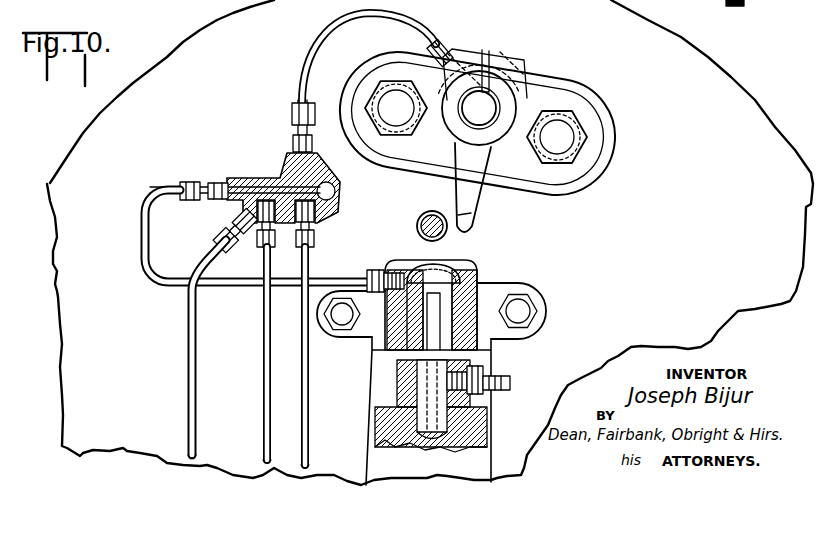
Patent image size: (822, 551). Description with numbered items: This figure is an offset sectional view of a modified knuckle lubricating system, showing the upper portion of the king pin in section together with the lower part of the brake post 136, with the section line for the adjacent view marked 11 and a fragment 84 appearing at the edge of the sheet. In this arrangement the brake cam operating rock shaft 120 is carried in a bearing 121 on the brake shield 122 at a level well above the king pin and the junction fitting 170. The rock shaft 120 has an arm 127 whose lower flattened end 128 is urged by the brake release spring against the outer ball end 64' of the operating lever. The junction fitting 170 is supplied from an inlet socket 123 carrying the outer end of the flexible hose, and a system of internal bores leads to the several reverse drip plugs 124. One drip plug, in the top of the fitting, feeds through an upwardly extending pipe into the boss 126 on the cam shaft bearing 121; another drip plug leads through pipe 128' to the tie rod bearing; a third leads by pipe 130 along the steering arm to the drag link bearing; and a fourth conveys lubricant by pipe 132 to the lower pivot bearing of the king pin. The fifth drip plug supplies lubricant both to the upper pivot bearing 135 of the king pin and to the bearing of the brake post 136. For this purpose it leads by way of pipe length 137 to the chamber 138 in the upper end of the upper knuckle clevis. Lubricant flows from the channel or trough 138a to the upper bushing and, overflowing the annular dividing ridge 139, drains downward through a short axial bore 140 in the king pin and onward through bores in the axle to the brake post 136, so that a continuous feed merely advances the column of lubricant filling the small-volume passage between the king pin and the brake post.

The section line 11- 11 is at (180, 21).
The outer ball end 64' is at (425, 211).
The pump part 84 is at (751, 5).
The brake cam operating rock shaft 120 is at (500, 107).
The bearing 121 is at (522, 64).
The brake shield 122 is at (668, 38).
The inlet socket 123 is at (343, 185).
The reverse drip plugs 124 is at (236, 176).
The boss 126 is at (441, 66).
The arm 127 is at (467, 197).
The lower flattened end 128 is at (498, 225).
The pipe 128' is at (244, 355).
The pipe 130 is at (188, 344).
The pipe 132 is at (309, 410).
The upper pivot bearing 135 is at (478, 284).
The brake post 136 is at (448, 410).
The pipe length 137 is at (240, 286).
The chamber 138 is at (450, 266).
The channel or trough 138a is at (388, 268).
The annular dividing ridge 139 is at (407, 270).
The short axial bore 140 is at (428, 347).
The junction fitting 170 is at (331, 202).